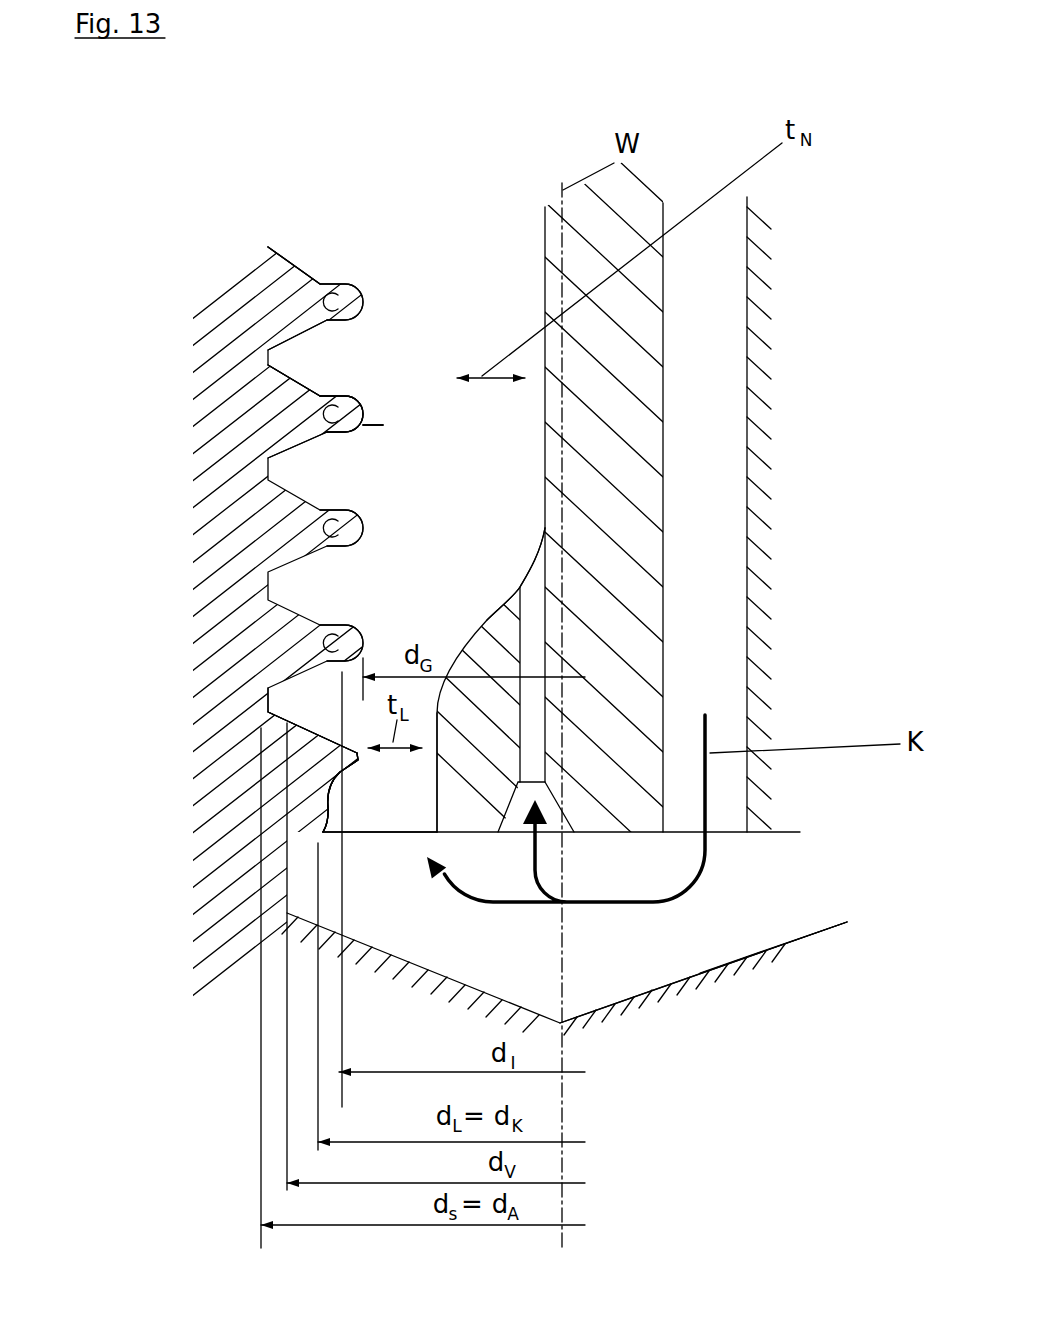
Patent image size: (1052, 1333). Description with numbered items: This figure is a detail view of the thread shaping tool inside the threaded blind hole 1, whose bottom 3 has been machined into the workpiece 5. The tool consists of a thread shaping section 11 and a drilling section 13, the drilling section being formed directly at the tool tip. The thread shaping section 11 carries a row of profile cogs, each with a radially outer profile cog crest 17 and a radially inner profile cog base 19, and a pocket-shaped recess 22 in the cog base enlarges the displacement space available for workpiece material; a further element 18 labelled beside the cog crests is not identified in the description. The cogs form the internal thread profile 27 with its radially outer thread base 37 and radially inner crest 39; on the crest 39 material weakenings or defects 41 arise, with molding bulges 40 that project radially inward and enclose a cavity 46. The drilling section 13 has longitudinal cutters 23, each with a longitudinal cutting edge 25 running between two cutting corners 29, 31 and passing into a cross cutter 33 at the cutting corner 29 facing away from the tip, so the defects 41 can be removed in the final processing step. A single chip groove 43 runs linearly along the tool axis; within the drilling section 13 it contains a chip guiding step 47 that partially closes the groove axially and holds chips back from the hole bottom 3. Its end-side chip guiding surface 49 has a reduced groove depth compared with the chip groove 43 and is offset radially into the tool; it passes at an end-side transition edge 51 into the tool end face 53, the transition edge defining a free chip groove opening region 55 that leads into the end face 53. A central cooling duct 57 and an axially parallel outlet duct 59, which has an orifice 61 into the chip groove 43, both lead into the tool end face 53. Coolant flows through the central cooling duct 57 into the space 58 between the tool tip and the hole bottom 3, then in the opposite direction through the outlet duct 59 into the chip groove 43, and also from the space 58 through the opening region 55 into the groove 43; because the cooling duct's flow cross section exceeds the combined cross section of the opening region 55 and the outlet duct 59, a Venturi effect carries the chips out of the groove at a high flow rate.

The threaded blind hole 1 is at (825, 944).
The hole bottom 3 is at (703, 974).
The workpiece 5 is at (212, 585).
The thread shaping section 11 is at (195, 108).
The drilling section 13 is at (60, 676).
The profile cog crest 17 is at (268, 247).
The tooth flank 18 is at (288, 335).
The profile cog base 19 is at (338, 403).
The pocket-shaped recess 22 is at (348, 283).
The longitudinal cutter 23 is at (133, 718).
The longitudinal cutting edge 25 is at (327, 800).
The internal thread profile 27 is at (115, 320).
The cutting corner 29 is at (352, 763).
The cutting corner 31 is at (322, 828).
The cross cutter 33 is at (350, 753).
The thread base 37 is at (322, 396).
The crest 39 is at (335, 414).
The molding bulges 40 is at (350, 415).
The material weakenings or defects 41 is at (598, 108).
The chip groove 43 is at (466, 467).
The cavity 46 is at (345, 420).
The chip guiding step 47 is at (445, 622).
The chip guiding surface 49 is at (437, 777).
The end-side transition edge 51 is at (438, 833).
The tool end face 53 is at (778, 835).
The free chip groove opening region 55 is at (425, 845).
The central cooling duct 57 is at (748, 307).
The space 58 is at (753, 925).
The outlet duct 59 is at (545, 596).
The orifice 61 is at (535, 552).